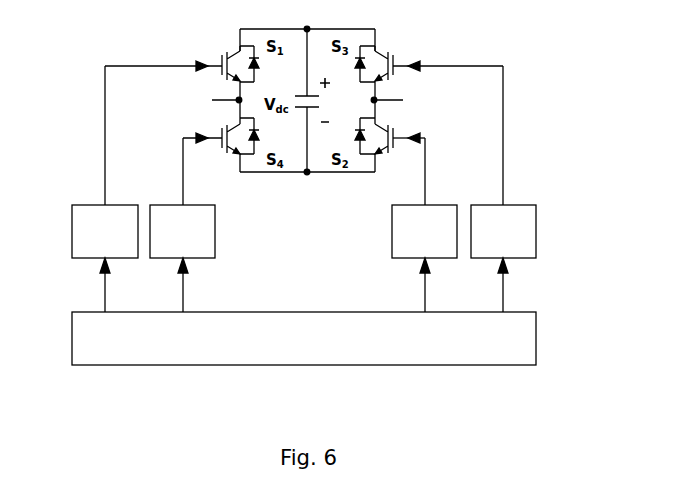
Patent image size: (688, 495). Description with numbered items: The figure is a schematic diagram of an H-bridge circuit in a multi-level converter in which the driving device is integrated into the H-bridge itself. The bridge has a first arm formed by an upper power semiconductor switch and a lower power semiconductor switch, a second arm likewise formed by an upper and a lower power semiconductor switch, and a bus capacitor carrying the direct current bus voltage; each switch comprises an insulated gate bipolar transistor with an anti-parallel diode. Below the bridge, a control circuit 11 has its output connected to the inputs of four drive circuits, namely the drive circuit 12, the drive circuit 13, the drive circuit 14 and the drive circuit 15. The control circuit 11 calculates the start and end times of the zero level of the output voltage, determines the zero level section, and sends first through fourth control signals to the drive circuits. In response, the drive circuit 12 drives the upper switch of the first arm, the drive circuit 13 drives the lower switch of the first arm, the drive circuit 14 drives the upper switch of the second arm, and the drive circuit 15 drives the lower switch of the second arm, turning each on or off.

The control circuit 11 is at (275, 365).
The drive circuit 12 is at (72, 227).
The drive circuit 13 is at (215, 230).
The drive circuit 14 is at (535, 233).
The drive circuit 15 is at (392, 222).